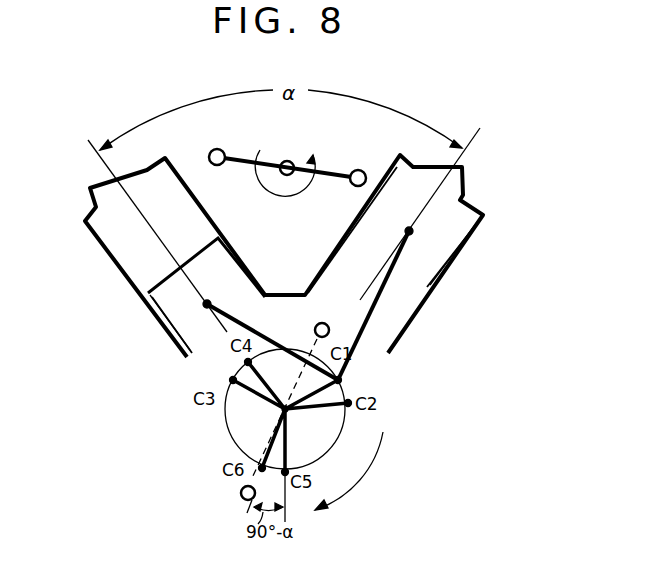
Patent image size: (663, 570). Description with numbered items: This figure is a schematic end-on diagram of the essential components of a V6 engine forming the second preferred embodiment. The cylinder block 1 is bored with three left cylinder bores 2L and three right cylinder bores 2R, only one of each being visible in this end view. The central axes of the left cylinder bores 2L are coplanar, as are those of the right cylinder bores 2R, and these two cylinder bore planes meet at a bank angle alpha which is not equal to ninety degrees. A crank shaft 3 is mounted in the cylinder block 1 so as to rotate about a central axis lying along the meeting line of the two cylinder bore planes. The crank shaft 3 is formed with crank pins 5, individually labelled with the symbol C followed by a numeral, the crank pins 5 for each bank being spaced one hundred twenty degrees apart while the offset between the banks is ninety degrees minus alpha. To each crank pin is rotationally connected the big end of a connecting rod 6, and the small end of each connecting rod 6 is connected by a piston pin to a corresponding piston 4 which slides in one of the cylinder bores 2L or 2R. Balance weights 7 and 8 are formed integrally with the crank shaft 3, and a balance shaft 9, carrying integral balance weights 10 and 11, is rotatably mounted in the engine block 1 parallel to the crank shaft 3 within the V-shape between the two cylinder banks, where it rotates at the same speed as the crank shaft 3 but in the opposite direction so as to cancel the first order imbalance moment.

The cylinder block 1 is at (418, 318).
The left cylinder bores 2L is at (130, 262).
The right cylinder bores 2R is at (441, 276).
The crank shaft 3 is at (289, 414).
The piston 4 is at (165, 322).
The crank pins 5 is at (232, 380).
The connecting rod 6 is at (270, 335).
The balance weight 7 is at (241, 495).
The balance weight 8 is at (323, 322).
The balance shaft 9 is at (287, 160).
The balance weight 10 is at (357, 170).
The balance weight 11 is at (215, 149).